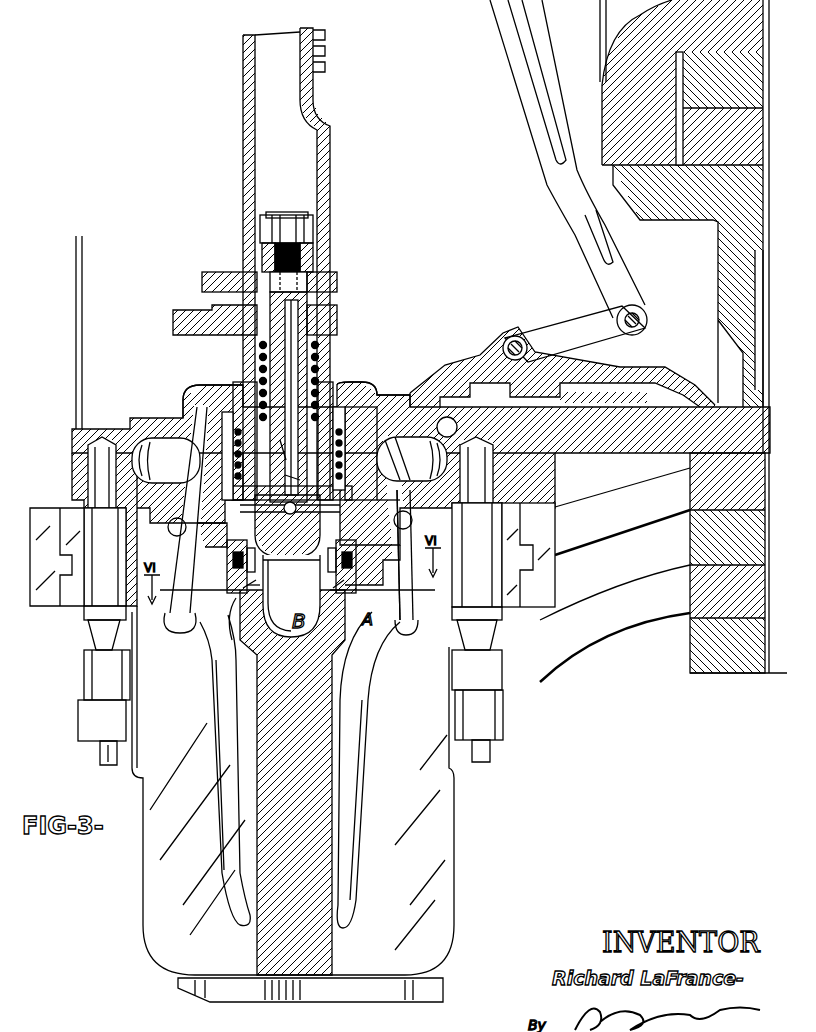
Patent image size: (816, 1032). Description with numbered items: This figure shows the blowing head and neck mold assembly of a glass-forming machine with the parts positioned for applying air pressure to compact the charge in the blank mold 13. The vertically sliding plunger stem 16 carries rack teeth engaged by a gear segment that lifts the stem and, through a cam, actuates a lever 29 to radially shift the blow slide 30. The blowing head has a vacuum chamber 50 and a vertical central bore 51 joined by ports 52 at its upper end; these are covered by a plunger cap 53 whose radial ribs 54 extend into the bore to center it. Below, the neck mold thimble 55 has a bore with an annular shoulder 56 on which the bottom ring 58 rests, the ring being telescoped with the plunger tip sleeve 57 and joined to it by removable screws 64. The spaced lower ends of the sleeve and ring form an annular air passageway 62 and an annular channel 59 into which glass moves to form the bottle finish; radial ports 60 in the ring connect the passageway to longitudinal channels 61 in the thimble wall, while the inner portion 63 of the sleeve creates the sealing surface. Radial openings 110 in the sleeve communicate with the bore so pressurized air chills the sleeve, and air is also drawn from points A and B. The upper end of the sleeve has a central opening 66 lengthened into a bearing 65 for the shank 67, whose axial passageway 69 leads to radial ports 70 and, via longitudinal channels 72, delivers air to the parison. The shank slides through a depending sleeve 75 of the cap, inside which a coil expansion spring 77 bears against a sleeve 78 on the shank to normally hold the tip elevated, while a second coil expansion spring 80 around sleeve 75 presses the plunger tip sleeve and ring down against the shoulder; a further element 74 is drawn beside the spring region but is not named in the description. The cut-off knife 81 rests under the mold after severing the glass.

The blank mold 13 is at (444, 815).
The plunger stem 16 is at (329, 190).
The lever 29 is at (548, 165).
The blow slide 30 is at (486, 353).
The vacuum chamber 50 is at (178, 485).
The central bore 51 is at (346, 454).
The ports 52 is at (406, 459).
The plunger cap 53 is at (378, 390).
The radial ribs 54 is at (352, 420).
The neck mold thimble 55 is at (349, 622).
The annular shoulder 56 is at (291, 521).
The plunger tip sleeve 57 is at (228, 554).
The bottom ring 58 is at (246, 585).
The annular channel 59 is at (237, 619).
The radial ports 60 is at (236, 568).
The longitudinal channels 61 is at (247, 558).
The annular air passageway 62 is at (240, 588).
The inner portion 63 is at (285, 595).
The screws 64 is at (346, 565).
The bearing 65 is at (288, 450).
The central opening 66 is at (291, 479).
The shank 67 is at (320, 363).
The axial passageway 69 is at (286, 362).
The radial ports 70 is at (290, 502).
The longitudinal channels 72 is at (388, 527).
The spring 74 is at (260, 458).
The depending sleeve 75 is at (250, 421).
The coil expansion spring 77 is at (262, 345).
The sleeve 78 is at (313, 299).
The coil expansion spring 80 is at (236, 442).
The cut-off knife 81 is at (350, 996).
The radial openings 110 is at (398, 536).